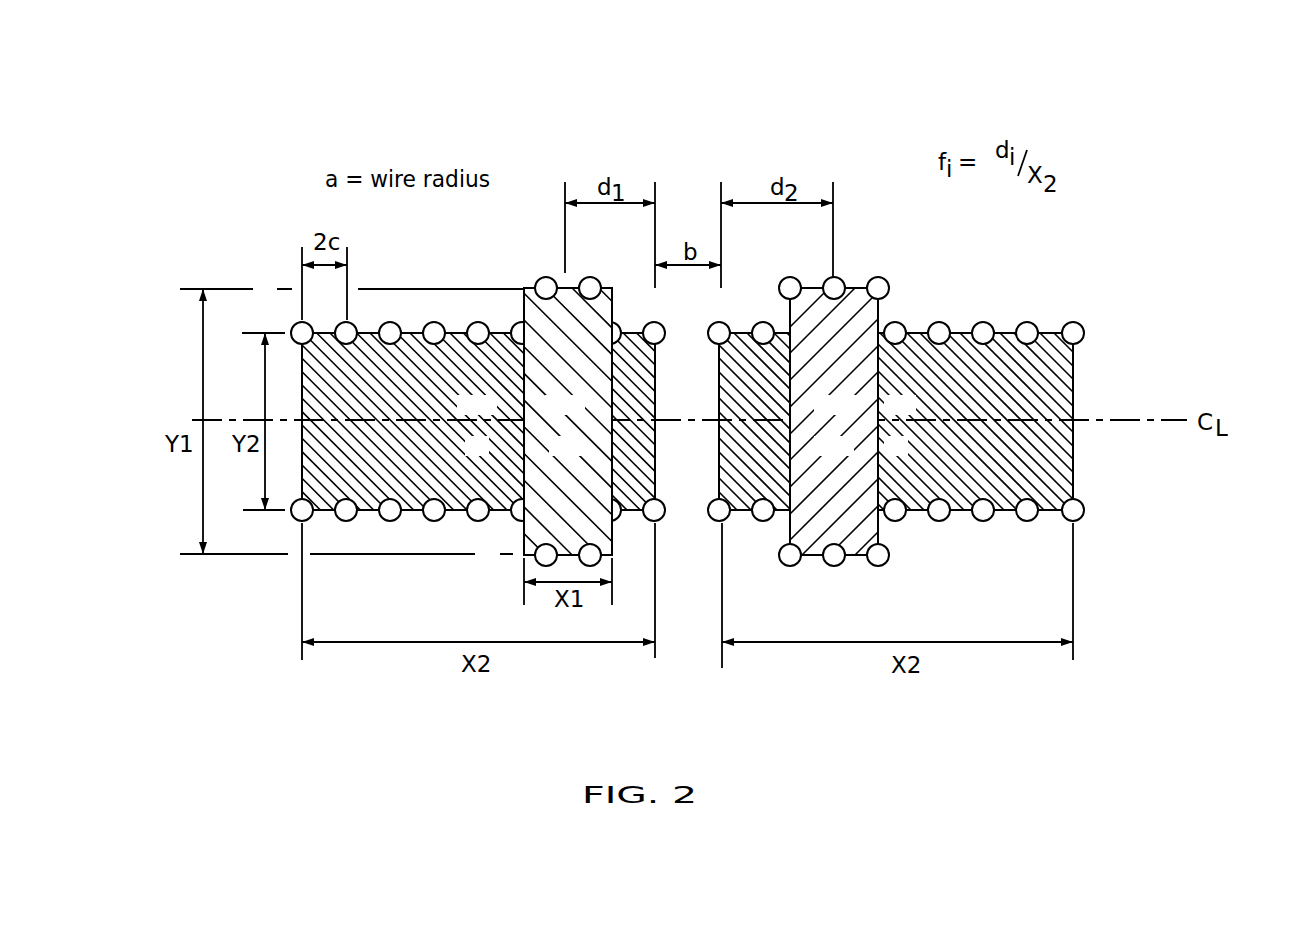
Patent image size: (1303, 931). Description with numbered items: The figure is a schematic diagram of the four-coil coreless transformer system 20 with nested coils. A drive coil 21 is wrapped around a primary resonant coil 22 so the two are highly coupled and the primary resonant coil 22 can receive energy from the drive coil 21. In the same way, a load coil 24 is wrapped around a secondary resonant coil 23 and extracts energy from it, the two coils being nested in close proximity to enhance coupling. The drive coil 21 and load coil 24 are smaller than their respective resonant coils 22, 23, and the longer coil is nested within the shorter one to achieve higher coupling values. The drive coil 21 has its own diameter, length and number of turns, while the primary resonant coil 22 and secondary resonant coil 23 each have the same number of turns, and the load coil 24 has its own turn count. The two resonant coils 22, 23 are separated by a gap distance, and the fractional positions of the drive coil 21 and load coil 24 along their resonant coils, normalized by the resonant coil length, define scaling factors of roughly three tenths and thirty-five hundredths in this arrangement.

The 4-coil system 20 is at (625, 73).
The drive coil 21 is at (547, 498).
The primary resonant coil 22 is at (335, 353).
The secondary resonant coil 23 is at (992, 358).
The load coil 24 is at (930, 562).